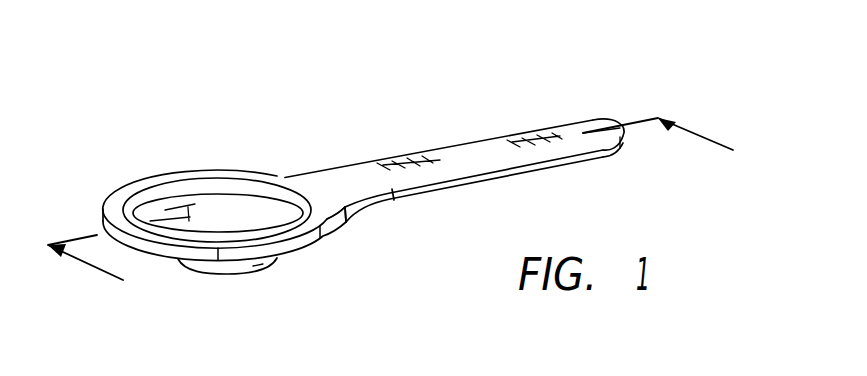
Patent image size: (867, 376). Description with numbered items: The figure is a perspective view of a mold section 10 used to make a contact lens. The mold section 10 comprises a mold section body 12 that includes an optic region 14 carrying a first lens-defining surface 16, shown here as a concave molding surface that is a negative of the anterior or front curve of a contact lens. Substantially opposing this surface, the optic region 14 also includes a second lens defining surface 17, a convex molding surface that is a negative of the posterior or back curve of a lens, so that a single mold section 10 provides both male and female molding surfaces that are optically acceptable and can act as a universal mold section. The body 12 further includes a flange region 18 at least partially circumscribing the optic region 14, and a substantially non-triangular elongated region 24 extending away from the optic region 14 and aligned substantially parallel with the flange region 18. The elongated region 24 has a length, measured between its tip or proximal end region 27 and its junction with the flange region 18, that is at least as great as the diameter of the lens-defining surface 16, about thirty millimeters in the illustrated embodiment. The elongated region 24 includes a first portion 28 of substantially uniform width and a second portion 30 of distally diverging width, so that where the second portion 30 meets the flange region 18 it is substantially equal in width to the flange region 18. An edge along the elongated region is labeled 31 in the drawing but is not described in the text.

The mold section 10 is at (600, 81).
The mold section body 12 is at (348, 155).
The optic region 14 is at (200, 204).
The first lens-defining surface 16 is at (253, 212).
The second lens defining surface 17 is at (227, 274).
The flange region 18 is at (135, 205).
The elongated region 24 is at (506, 145).
The proximal end region 27 is at (617, 122).
The first portion 28 is at (457, 162).
The second portion 30 is at (340, 190).
The handle edge 31 is at (397, 198).